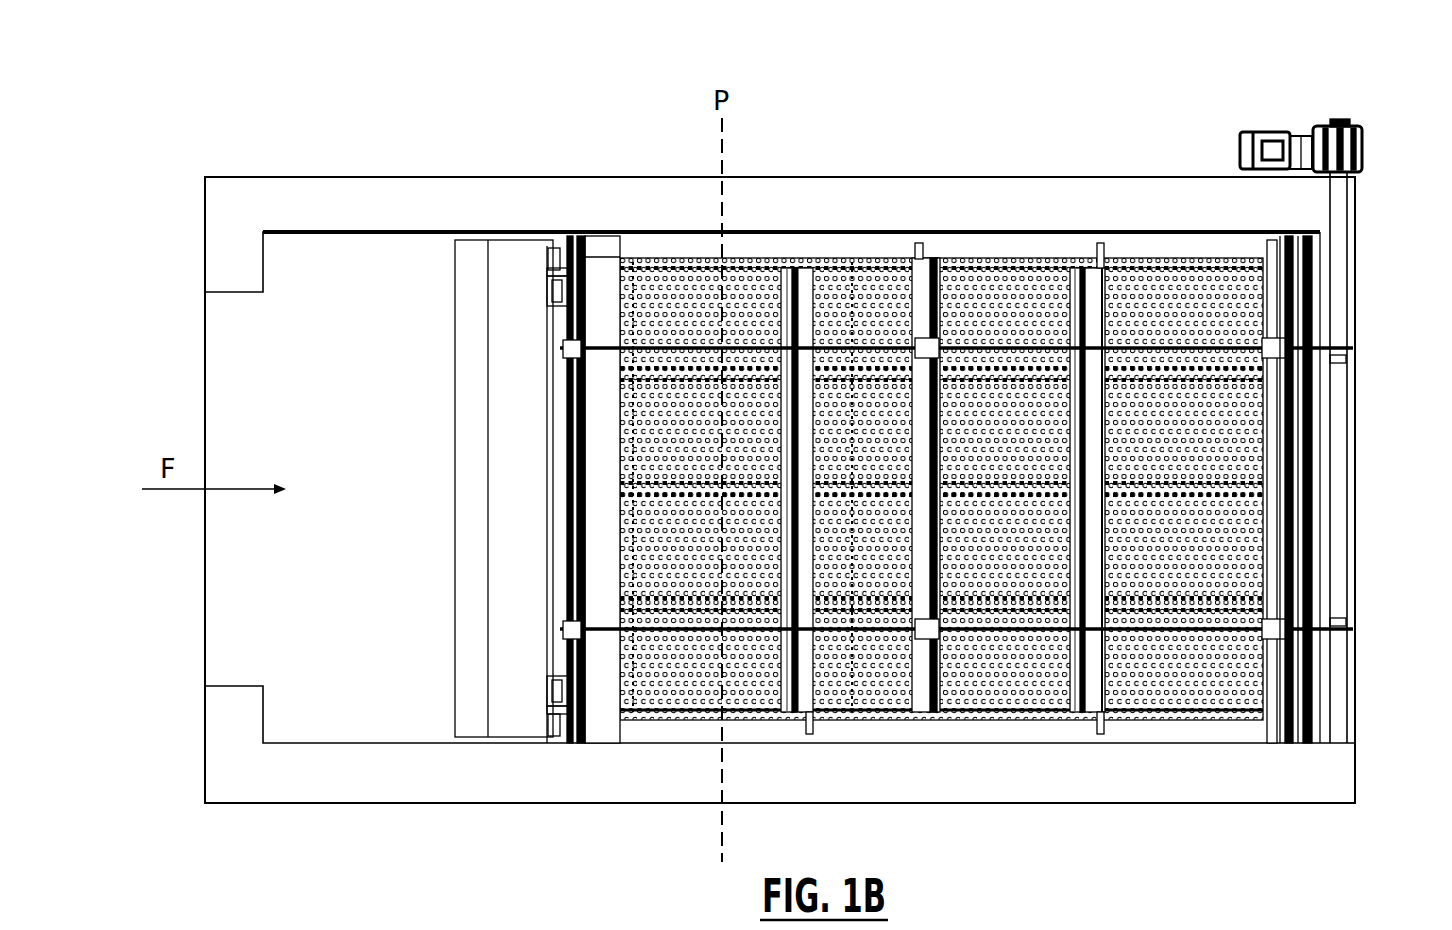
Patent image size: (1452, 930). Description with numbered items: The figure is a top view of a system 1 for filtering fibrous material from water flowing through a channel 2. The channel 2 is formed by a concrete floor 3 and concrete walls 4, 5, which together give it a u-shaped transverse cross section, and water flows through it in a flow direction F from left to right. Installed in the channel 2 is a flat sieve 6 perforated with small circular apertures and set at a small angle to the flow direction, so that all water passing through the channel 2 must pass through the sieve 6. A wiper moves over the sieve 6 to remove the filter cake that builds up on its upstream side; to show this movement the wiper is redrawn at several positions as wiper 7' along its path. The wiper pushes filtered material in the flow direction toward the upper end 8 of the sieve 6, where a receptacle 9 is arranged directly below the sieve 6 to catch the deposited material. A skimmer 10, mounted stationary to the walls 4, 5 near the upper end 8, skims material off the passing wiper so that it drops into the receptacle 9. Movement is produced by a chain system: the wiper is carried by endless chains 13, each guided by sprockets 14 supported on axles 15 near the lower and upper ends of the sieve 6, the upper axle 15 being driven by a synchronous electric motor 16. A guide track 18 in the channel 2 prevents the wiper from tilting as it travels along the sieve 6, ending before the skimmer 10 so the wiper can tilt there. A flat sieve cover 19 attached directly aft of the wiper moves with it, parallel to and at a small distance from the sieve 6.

The system 1 is at (192, 112).
The channel 2 is at (437, 165).
The concrete floor 3 is at (312, 398).
The concrete wall 4 is at (900, 205).
The concrete wall 5 is at (518, 785).
The sieve 6 is at (1158, 295).
The wiper 7' is at (1029, 546).
The upper end 8 is at (1262, 518).
The receptacle 9 is at (1348, 430).
The skimmer 10 is at (1312, 667).
The endless chain 13 is at (600, 345).
The sprocket 14 is at (575, 357).
The axle 15 is at (578, 535).
The synchronous electric motor 16 is at (1310, 140).
The guide track 18 is at (613, 243).
The sieve cover 19 is at (800, 300).